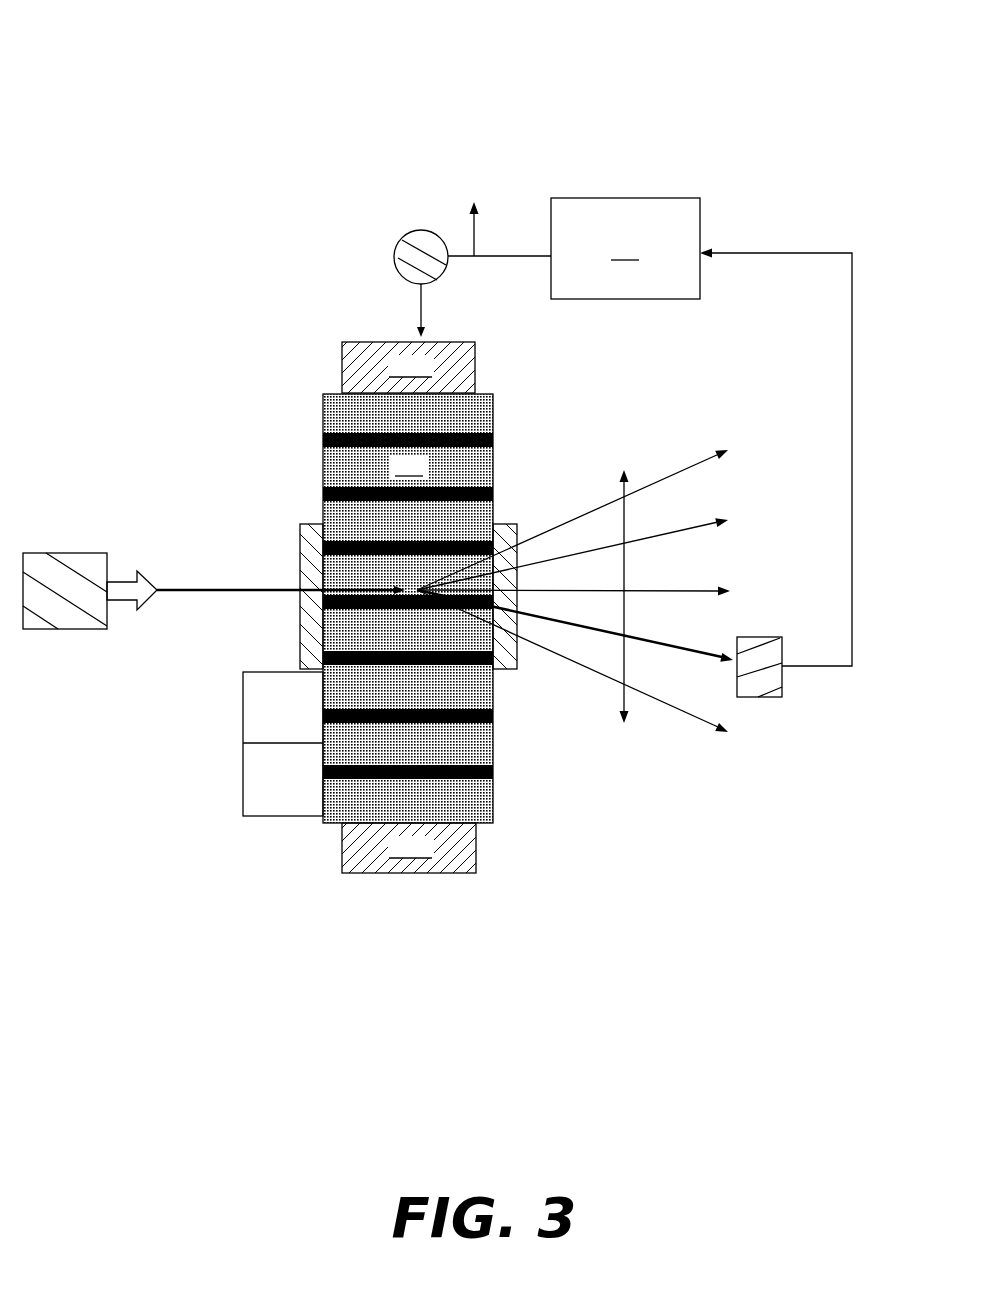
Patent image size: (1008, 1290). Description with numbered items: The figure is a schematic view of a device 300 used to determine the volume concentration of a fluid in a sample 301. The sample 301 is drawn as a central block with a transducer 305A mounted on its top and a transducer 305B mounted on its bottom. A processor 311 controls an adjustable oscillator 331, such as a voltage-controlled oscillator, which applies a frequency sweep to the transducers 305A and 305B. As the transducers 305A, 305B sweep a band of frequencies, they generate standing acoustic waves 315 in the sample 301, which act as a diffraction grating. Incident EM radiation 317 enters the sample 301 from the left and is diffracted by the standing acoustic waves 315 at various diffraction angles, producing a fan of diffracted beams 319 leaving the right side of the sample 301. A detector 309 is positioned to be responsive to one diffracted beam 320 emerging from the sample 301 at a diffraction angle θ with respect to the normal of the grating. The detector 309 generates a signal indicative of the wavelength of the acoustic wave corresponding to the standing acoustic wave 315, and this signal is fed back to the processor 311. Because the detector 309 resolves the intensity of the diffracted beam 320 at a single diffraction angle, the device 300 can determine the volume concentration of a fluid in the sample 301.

The device 300 is at (196, 58).
The sample 301 is at (408, 608).
The transducer 305A is at (408, 367).
The transducer 305B is at (409, 848).
The detector 309 is at (760, 637).
The processor 311 is at (725, 432).
The standing acoustic waves 315 is at (296, 440).
The incident EM radiation 317 is at (233, 590).
The diffracted beams 319 is at (640, 455).
The diffracted beam 320 is at (648, 643).
The adjustable oscillator 331 is at (400, 252).